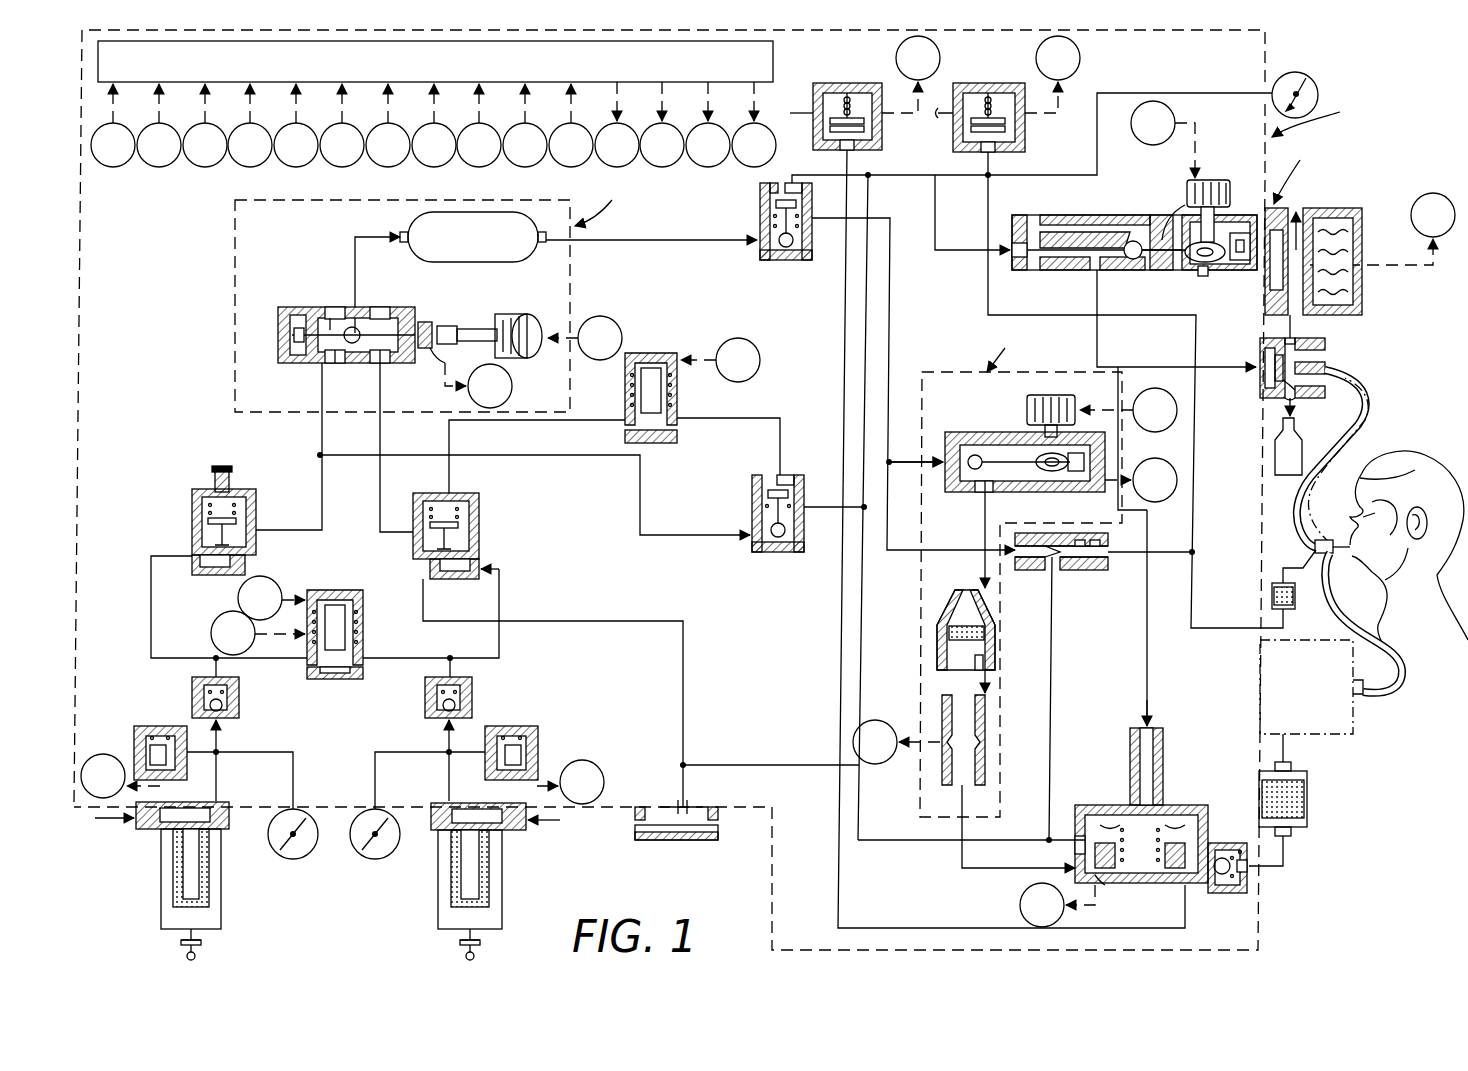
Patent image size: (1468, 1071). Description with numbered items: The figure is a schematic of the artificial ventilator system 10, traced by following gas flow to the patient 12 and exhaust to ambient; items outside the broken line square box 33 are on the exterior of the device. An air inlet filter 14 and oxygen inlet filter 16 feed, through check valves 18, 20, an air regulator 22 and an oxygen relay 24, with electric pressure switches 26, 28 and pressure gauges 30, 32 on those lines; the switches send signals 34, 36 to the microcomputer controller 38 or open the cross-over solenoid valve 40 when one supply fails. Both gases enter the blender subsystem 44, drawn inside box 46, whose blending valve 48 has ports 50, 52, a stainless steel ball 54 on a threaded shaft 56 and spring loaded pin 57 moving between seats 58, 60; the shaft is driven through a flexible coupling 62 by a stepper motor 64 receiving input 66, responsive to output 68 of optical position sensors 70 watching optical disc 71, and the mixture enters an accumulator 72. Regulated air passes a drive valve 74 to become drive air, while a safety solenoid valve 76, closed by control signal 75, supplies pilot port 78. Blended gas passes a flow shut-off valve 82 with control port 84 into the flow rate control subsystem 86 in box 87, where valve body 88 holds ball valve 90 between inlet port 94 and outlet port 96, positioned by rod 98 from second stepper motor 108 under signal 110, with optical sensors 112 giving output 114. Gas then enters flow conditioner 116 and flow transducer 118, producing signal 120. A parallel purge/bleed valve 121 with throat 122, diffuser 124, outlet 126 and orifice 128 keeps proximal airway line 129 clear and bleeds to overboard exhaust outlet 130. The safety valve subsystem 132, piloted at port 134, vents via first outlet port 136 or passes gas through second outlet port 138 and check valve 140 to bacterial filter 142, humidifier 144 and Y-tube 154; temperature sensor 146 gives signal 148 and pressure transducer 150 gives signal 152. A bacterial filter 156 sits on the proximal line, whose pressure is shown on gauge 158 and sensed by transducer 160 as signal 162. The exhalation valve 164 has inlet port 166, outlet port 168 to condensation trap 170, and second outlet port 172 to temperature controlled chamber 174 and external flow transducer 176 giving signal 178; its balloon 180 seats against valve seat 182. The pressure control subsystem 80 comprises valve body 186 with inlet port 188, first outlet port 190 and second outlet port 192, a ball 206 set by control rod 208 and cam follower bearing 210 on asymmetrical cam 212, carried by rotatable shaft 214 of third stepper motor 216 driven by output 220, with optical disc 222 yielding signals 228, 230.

The ventilator system 10 is at (1318, 115).
The patient 12 is at (1420, 465).
The air inlet filter 14 is at (161, 868).
The oxygen inlet filter 16 is at (502, 880).
The check valve 18 is at (192, 695).
The check valve 20 is at (472, 692).
The air regulator 22 is at (192, 512).
The oxygen relay 24 is at (479, 514).
The electric pressure switch 26 is at (134, 748).
The electric pressure switch 28 is at (538, 748).
The pressure gauge 30 is at (293, 859).
The pressure gauge 32 is at (375, 859).
The broken line square box 33 is at (80, 262).
The electric output signal 34 is at (193, 441).
The electric output signal 36 is at (370, 444).
The microcomputer controller 38 is at (773, 60).
The cross-over solenoid valve 40 is at (363, 612).
The blender subsystem 44 is at (600, 202).
The box 46 is at (283, 200).
The oxygen blending valve 48 is at (352, 318).
The port 50 is at (343, 332).
The port 52 is at (385, 400).
The stainless steel ball 54 is at (358, 330).
The threaded shaft 56 is at (425, 322).
The spring loaded pin 57 is at (330, 318).
The seat 58 is at (335, 363).
The seat 60 is at (380, 363).
The flexible coupling 62 is at (445, 365).
The stepper motor 64 is at (520, 318).
The input 66 is at (639, 221).
The output 68 is at (347, 246).
The optical position sensors 70 is at (477, 329).
The optical disc 71 is at (447, 326).
The accumulator 72 is at (485, 214).
The drive valve 74 is at (752, 508).
The electric control signal 75 is at (677, 232).
The safety solenoid valve 76 is at (677, 392).
The control or pilot pressure port 78 is at (786, 475).
The pressure control subsystem 80 is at (1294, 239).
The flow shut-off valve 82 is at (760, 222).
The control port 84 is at (785, 183).
The flow rate control subsystem 86 is at (990, 350).
The box 87 is at (948, 372).
The valve body 88 is at (1032, 467).
The ball valve 90 is at (980, 455).
The inlet port 94 is at (960, 455).
The outlet port 96 is at (985, 492).
The rod 98 is at (1005, 470).
The second stepper motor 108 is at (1051, 395).
The electric input signal 110 is at (908, 257).
The optical sensors 112 is at (1075, 455).
The output 114 is at (702, 293).
The flow conditioner 116 is at (937, 642).
The flow transducer 118 is at (942, 702).
The electronic signal 120 is at (607, 424).
The purge/bleed valve 121 is at (1040, 572).
The throat 122 is at (1098, 688).
The diffuser 124 is at (1080, 546).
The outlet 126 is at (1056, 572).
The orifice 128 is at (1100, 570).
The proximal airway line 129 is at (1290, 570).
The overboard exhaust outlet 130 is at (712, 840).
The safety valve subsystem 132 is at (1085, 805).
The control or pilot pressure port 134 is at (1152, 735).
The first outlet port 136 is at (1075, 845).
The second outlet port 138 is at (1250, 868).
The one-way check valve 140 is at (1222, 876).
The bacterial filter 142 is at (1307, 800).
The humidifier 144 is at (1350, 722).
The temperature sensor 146 is at (1097, 875).
The input signal 148 is at (707, 505).
The pressure transducer 150 is at (855, 83).
The input signal 152 is at (653, 101).
The Y-tube 154 is at (1349, 531).
The bacterial filter 156 is at (1272, 594).
The pressure gauge 158 is at (1308, 72).
The pressure transducer 160 is at (993, 83).
The input signal 162 is at (746, 101).
The exhalation valve 164 is at (1325, 345).
The inlet port 166 is at (1325, 368).
The outlet port 168 is at (1285, 400).
The condensation trap 170 is at (1302, 452).
The second outlet port 172 is at (1288, 338).
The temperature controlled chamber 174 is at (1362, 270).
The external flow transducer 176 is at (1306, 222).
The input signal 178 is at (956, 174).
The balloon 180 is at (1275, 360).
The valve seat 182 is at (1283, 380).
The valve body 186 is at (1103, 321).
The inlet port 188 is at (1012, 250).
The first outlet port 190 is at (1045, 232).
The second outlet port 192 is at (1095, 272).
The ball 206 is at (1133, 241).
The control rod 208 is at (1165, 252).
The cam follower bearing 210 is at (1202, 276).
The asymmetrical cam 212 is at (1215, 243).
The rotatable shaft 214 is at (1185, 205).
The third stepper motor 216 is at (1200, 180).
The output 220 is at (963, 130).
The optical disc 222 is at (1238, 260).
The signal 228 is at (525, 125).
The signal 230 is at (571, 125).